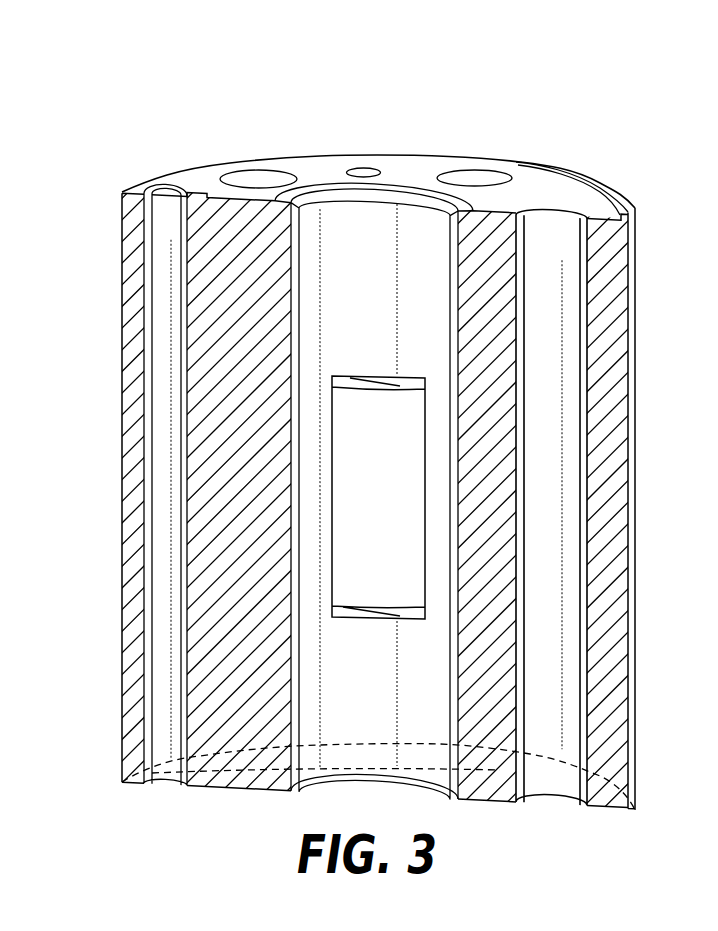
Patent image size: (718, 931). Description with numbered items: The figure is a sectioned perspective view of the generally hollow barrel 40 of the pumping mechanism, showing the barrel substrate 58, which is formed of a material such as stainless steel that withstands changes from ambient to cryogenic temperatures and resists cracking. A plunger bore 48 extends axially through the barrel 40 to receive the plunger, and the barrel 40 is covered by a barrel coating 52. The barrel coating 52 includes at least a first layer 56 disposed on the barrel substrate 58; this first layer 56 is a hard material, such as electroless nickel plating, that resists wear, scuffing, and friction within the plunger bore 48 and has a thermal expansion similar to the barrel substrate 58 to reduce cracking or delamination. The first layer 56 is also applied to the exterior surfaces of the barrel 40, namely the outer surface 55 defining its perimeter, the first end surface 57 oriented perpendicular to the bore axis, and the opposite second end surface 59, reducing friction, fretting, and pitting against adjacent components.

The barrel 40 is at (593, 148).
The plunger bore 48 is at (358, 210).
The barrel coating 52 is at (412, 213).
The outer surface 55 is at (634, 484).
The first layer 56 is at (368, 305).
The first end surface 57 is at (293, 168).
The barrel substrate 58 is at (391, 507).
The second end surface 59 is at (542, 757).